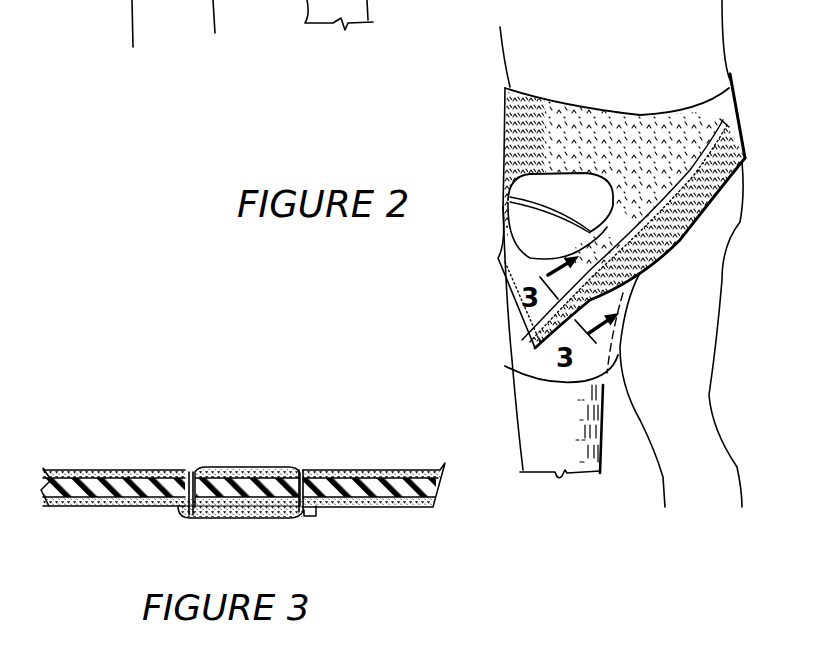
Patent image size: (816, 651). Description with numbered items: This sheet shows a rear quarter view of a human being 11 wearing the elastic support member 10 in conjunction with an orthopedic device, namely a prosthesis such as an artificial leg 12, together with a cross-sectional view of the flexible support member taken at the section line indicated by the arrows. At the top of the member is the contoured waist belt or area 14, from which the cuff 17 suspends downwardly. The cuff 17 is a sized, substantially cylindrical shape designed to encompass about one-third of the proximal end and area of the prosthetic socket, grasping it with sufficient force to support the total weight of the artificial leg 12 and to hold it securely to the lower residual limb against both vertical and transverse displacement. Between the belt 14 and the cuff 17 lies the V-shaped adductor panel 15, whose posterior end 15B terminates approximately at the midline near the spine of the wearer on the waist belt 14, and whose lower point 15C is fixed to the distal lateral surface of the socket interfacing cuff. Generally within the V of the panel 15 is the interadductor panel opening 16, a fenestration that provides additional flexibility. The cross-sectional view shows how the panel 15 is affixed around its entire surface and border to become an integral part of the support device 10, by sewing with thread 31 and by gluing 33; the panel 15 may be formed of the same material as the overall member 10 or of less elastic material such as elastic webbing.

In FIG. 2, the elastic support member 10 is at (573, 103).
In FIG. 3, the elastic support member 10 is at (100, 470).
In FIG. 2, the human being 11 is at (717, 33).
In FIG. 2, the artificial leg 12 is at (520, 433).
In FIG. 2, the contoured waist belt 14 is at (495, 87).
In FIG. 3, the V-shaped adductor panel 15 is at (173, 510).
In FIG. 2, the posterior end 15B is at (729, 88).
In FIG. 2, the lower point 15C is at (530, 353).
In FIG. 2, the interadductor panel opening 16 is at (547, 193).
In FIG. 2, the cuff 17 is at (495, 265).
In FIG. 3, the thread 31 is at (192, 478).
In FIG. 3, the gluing 33 is at (260, 500).